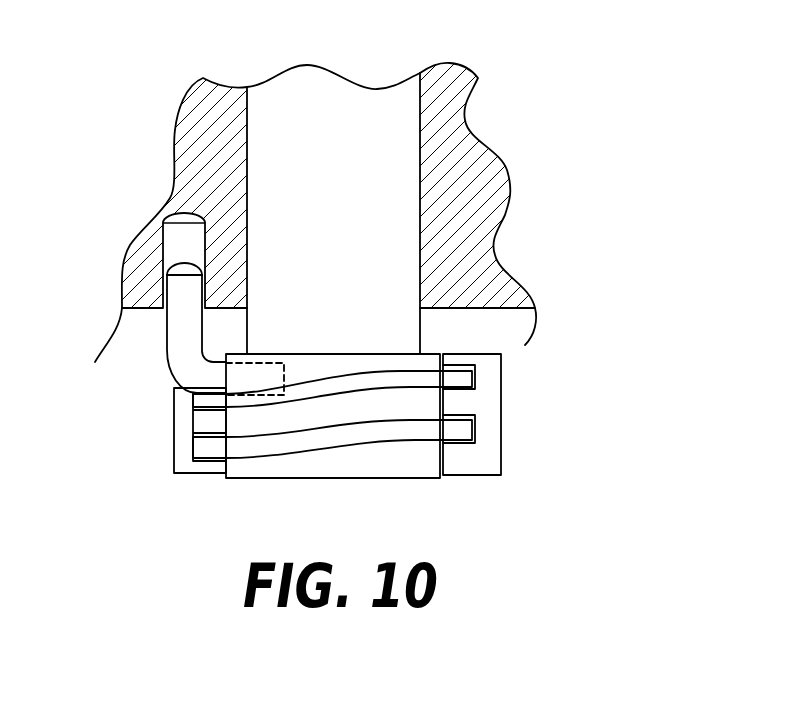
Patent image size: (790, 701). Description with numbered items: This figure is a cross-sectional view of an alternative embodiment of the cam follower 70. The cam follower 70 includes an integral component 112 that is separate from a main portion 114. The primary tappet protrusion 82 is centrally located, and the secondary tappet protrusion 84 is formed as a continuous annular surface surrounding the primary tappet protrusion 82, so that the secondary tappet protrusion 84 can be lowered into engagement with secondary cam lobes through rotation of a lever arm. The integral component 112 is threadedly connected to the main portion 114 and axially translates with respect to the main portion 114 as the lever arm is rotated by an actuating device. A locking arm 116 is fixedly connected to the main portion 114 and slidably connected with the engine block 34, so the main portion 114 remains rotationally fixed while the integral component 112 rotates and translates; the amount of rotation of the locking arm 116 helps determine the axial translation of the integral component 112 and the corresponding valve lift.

The engine block 34 is at (483, 177).
The main portion 114 is at (358, 110).
The locking arm 116 is at (182, 328).
The cam follower 70 is at (352, 449).
The primary tappet protrusion 82 is at (320, 480).
The integral component 112 is at (173, 432).
The secondary tappet protrusion 84 is at (175, 475).